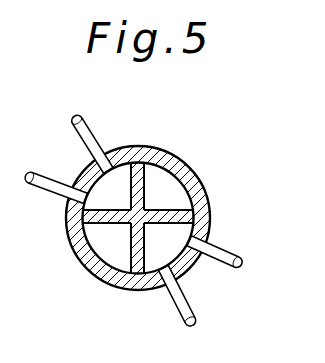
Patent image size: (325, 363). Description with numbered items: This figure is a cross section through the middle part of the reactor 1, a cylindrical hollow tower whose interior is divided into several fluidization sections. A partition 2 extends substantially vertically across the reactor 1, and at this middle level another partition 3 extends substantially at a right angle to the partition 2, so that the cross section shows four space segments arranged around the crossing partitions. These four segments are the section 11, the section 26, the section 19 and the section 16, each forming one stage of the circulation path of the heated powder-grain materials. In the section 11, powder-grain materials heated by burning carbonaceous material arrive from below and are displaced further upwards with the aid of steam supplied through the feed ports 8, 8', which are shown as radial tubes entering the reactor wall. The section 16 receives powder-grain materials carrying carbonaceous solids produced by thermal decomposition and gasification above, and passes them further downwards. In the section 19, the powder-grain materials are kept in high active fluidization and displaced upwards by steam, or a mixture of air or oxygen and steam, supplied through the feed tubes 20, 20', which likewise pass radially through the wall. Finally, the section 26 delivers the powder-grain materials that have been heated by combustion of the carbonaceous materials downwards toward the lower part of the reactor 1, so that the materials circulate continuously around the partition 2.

The reactor 1 is at (69, 234).
The partition 2 is at (152, 178).
The partition 3 is at (100, 243).
The feed port 8 is at (56, 169).
The feed port 8' is at (95, 126).
The section 11 is at (121, 182).
The section 26 is at (173, 197).
The section 19 is at (180, 230).
The section 16 is at (117, 257).
The feed tube 20 is at (203, 295).
The feed tube 20' is at (243, 250).